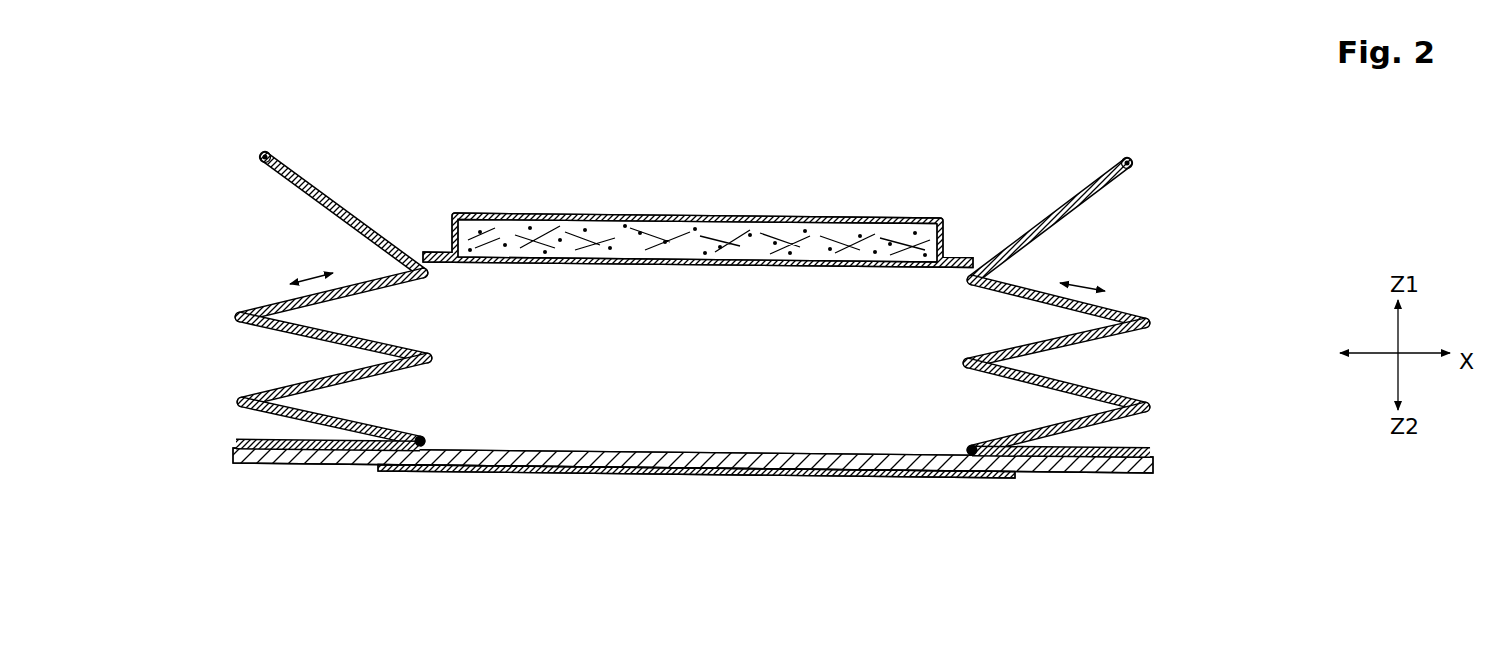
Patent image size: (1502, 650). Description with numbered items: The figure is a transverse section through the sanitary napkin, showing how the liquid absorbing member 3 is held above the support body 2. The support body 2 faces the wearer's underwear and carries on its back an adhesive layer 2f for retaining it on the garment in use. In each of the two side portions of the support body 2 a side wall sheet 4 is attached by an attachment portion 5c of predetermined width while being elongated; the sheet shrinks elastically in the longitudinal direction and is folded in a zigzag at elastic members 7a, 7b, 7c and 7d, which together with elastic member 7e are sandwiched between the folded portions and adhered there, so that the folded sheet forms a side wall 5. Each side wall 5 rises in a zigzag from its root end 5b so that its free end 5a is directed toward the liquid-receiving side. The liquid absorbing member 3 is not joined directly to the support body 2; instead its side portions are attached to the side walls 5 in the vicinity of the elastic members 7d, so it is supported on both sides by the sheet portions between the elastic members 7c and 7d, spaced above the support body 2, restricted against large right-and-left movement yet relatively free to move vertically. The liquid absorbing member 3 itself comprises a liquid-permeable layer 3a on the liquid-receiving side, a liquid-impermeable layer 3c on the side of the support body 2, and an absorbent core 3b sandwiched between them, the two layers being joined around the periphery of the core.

The support body 2 is at (736, 452).
The adhesive layer 2f is at (760, 479).
The liquid absorbing member 3 is at (698, 215).
The liquid-permeable layer 3a is at (555, 213).
The absorbent core 3b is at (623, 216).
The liquid-impermeable layer 3c is at (586, 267).
The side wall sheet 4 is at (323, 197).
The side wall 5 is at (695, 267).
The free end 5a is at (262, 155).
The root end 5b is at (428, 440).
The attachment portion 5c is at (276, 441).
The elastic member 7a is at (242, 402).
The elastic member 7b is at (430, 358).
The elastic member 7c is at (238, 315).
The elastic member 7d is at (434, 282).
The elastic member 7e is at (271, 156).